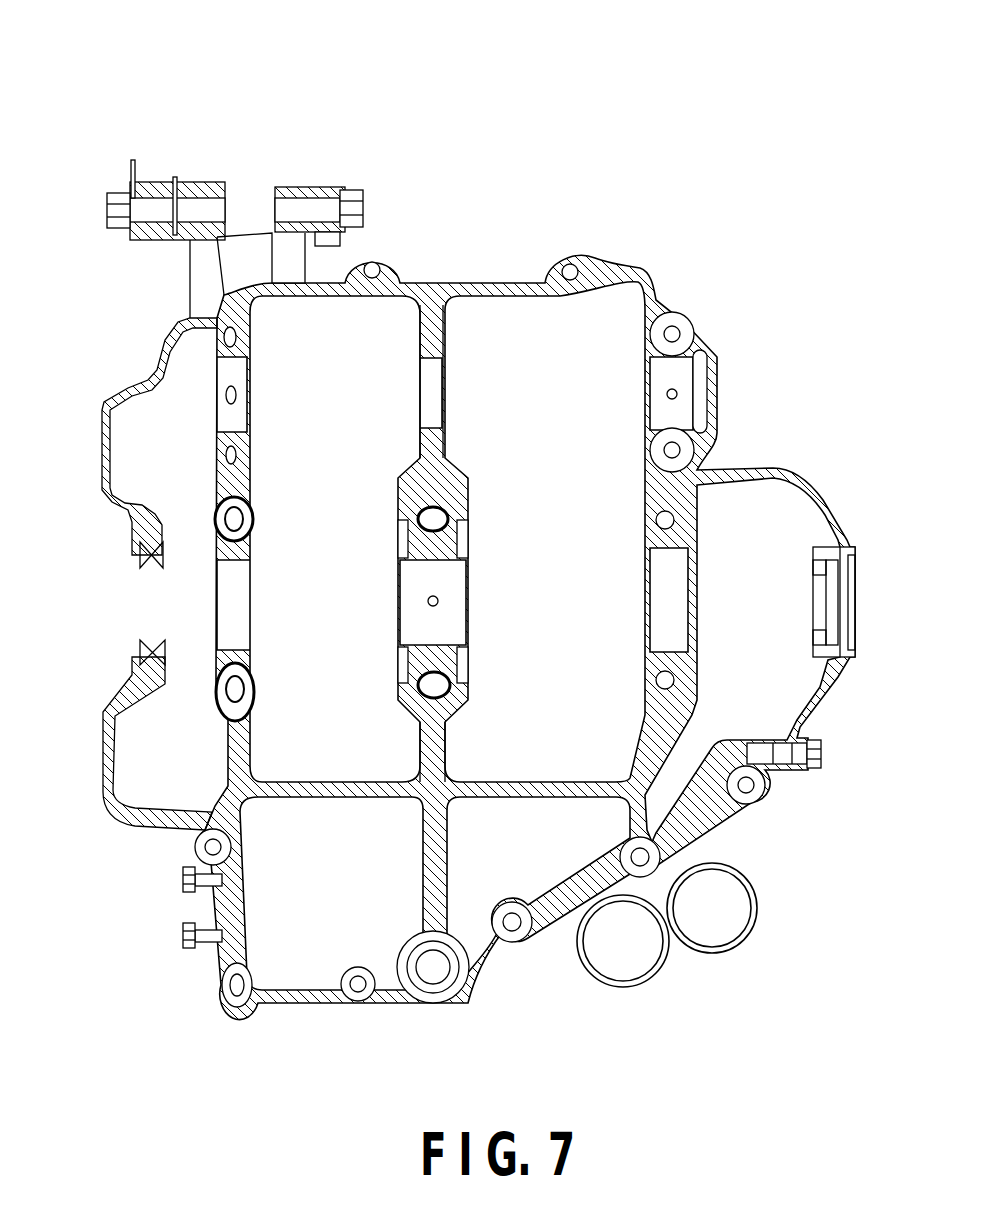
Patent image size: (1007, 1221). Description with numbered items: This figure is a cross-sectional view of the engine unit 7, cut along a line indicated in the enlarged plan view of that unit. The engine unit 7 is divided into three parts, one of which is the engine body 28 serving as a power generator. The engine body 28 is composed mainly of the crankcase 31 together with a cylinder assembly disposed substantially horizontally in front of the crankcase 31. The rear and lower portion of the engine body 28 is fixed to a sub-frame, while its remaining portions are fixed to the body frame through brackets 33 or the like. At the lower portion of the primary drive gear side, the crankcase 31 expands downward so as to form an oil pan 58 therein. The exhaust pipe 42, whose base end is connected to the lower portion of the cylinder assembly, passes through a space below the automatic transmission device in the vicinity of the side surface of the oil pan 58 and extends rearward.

The engine unit 7 is at (632, 147).
The engine body 28 is at (722, 297).
The crankcase 31 is at (425, 288).
The brackets 33 is at (205, 278).
The exhaust pipe 42 is at (730, 866).
The oil pan 58 is at (350, 897).